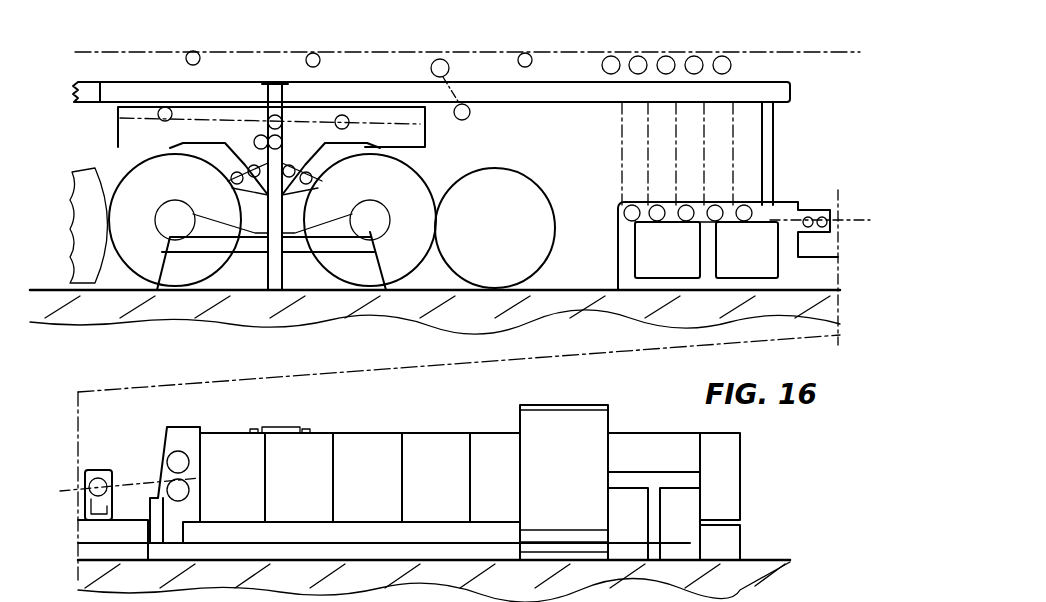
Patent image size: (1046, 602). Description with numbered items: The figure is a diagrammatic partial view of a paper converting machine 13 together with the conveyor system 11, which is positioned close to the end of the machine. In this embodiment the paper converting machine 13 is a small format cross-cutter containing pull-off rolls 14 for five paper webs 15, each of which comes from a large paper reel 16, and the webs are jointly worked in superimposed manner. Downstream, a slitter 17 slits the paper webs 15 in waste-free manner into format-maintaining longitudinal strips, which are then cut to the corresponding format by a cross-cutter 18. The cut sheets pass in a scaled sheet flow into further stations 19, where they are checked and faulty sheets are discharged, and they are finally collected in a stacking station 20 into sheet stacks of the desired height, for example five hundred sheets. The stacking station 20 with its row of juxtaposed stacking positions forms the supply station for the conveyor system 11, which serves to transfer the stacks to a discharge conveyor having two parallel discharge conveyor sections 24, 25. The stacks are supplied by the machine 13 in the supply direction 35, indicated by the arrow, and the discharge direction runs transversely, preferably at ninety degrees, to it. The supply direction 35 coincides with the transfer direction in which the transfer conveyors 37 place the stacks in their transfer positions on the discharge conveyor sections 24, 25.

The conveyor system 11 is at (762, 444).
The paper converting machine 13 is at (790, 63).
The pull-off rolls 14 is at (576, 53).
The paper webs 15 is at (621, 127).
The paper reel 16 is at (416, 186).
The slitter 17 is at (144, 452).
The cross-cutter 18 is at (290, 426).
The further stations 19 is at (394, 420).
The stacking station 20 is at (565, 400).
The discharge conveyor section 24 is at (620, 505).
The discharge conveyor section 25 is at (690, 502).
The supply direction 35 is at (378, 478).
The transfer conveyors 37 is at (656, 441).